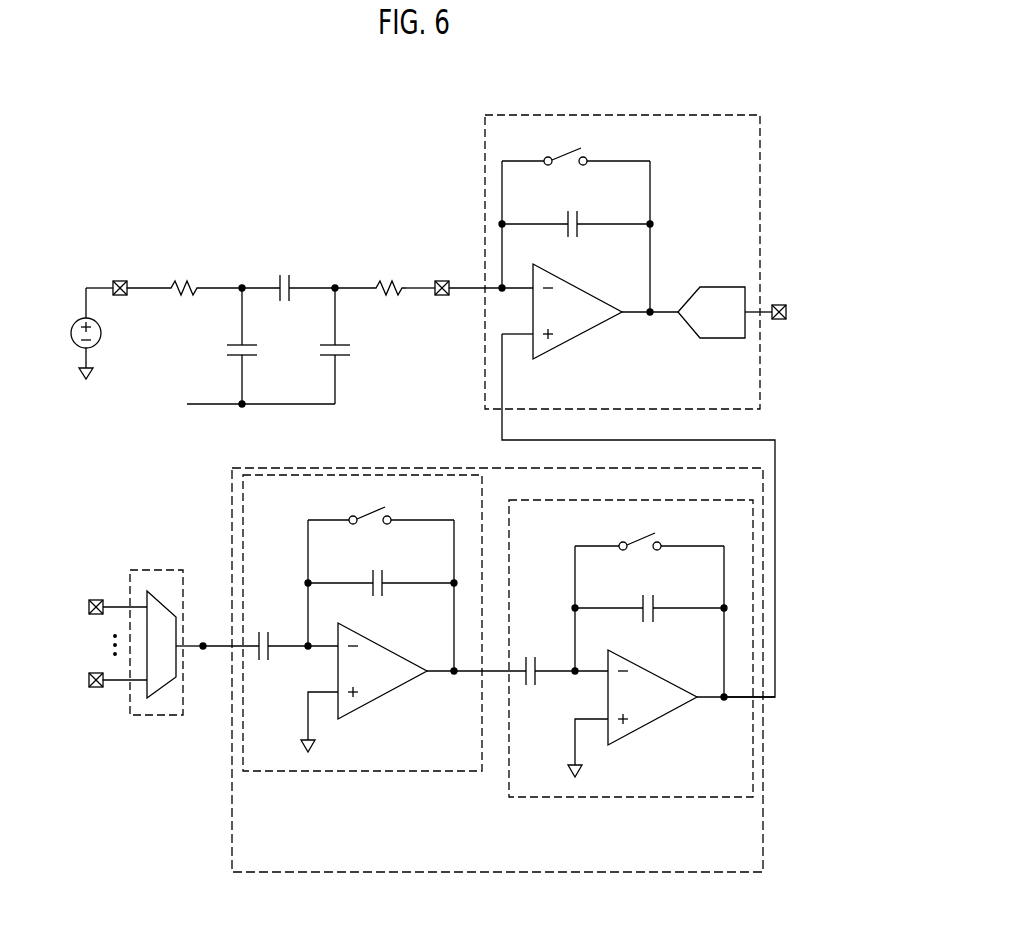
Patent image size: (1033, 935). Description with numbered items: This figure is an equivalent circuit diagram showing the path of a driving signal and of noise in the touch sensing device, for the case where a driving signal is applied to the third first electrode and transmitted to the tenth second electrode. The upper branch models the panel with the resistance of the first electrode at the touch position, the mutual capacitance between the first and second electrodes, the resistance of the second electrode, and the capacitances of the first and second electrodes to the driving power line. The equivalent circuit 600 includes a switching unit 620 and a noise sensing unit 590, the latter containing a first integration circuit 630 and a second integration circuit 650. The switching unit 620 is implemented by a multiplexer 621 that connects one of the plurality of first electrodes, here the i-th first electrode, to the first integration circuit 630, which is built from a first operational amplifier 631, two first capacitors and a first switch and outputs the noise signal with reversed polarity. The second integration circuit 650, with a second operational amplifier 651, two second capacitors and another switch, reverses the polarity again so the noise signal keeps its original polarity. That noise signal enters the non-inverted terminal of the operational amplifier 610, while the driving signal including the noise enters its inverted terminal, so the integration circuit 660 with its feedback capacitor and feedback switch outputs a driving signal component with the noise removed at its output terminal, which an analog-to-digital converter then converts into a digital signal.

The equivalent circuit 600 is at (394, 106).
The integration circuit 660 is at (663, 115).
The operational amplifier 610 is at (575, 343).
The noise sensing unit 590 is at (398, 467).
The switching unit 620 is at (153, 716).
The multiplexer 621 is at (165, 597).
The first integration circuit 630 is at (356, 772).
The first operational amplifier 631 is at (378, 706).
The second integration circuit 650 is at (625, 798).
The second operational amplifier 651 is at (647, 731).